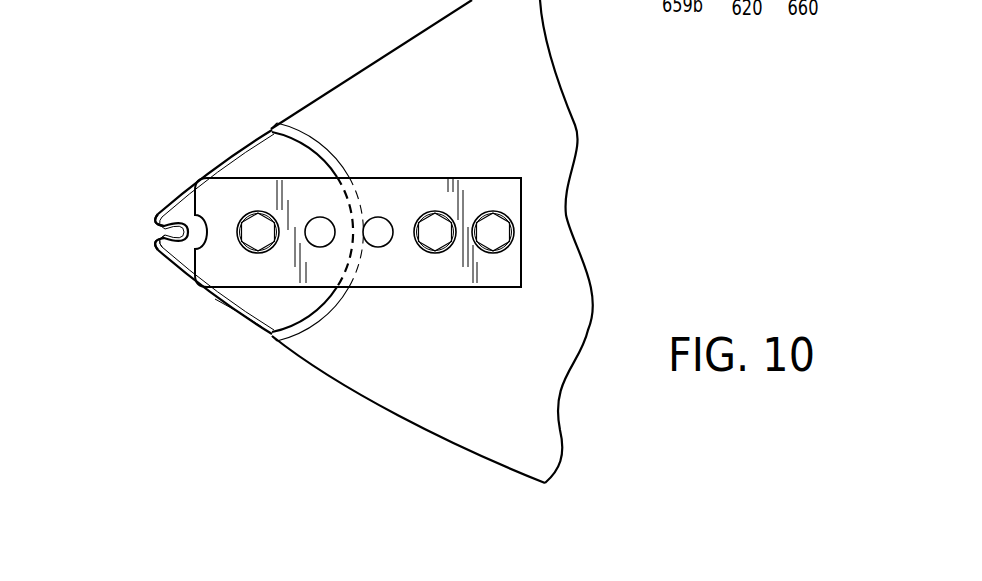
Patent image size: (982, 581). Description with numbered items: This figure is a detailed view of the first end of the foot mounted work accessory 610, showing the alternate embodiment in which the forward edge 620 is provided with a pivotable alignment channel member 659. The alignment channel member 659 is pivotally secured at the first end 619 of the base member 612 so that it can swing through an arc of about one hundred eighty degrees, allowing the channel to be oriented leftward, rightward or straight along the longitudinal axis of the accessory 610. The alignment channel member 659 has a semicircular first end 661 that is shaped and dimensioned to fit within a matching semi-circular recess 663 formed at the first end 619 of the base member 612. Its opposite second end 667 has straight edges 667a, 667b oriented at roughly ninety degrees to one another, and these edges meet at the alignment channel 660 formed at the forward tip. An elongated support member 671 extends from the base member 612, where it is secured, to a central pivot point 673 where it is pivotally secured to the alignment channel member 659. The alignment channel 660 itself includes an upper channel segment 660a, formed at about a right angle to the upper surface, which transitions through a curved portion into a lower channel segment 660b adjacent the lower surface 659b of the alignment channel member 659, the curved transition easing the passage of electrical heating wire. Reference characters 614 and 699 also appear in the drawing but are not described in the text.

The foot mounted work accessory 610 is at (592, 217).
The base member 612 is at (558, 134).
The mounting surface 614 is at (421, 112).
The first end of the base member 619 is at (300, 123).
The forward edge 620 is at (168, 210).
The alignment channel member 659 is at (250, 326).
The lower surface of the alignment channel member 659b is at (262, 152).
The alignment channel 660 is at (143, 227).
The upper channel segment 660a is at (197, 202).
The lower channel segment 660b is at (167, 234).
The semicircular first end 661 is at (282, 340).
The semi-circular recess 663 is at (324, 163).
The second end of the alignment channel member 667 is at (162, 255).
The straight edge 667a is at (227, 150).
The straight edge 667b is at (183, 280).
The elongated support member 671 is at (476, 190).
The central pivot point 673 is at (266, 237).
The clip arm junction 699 is at (230, 294).